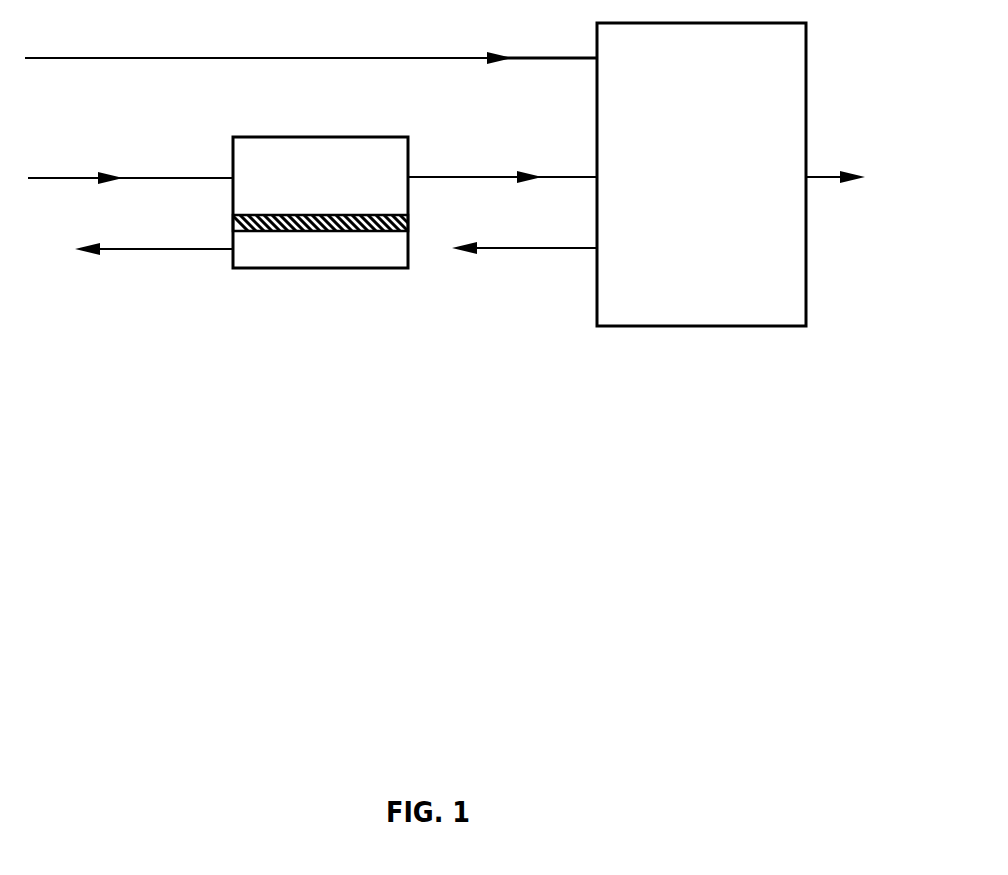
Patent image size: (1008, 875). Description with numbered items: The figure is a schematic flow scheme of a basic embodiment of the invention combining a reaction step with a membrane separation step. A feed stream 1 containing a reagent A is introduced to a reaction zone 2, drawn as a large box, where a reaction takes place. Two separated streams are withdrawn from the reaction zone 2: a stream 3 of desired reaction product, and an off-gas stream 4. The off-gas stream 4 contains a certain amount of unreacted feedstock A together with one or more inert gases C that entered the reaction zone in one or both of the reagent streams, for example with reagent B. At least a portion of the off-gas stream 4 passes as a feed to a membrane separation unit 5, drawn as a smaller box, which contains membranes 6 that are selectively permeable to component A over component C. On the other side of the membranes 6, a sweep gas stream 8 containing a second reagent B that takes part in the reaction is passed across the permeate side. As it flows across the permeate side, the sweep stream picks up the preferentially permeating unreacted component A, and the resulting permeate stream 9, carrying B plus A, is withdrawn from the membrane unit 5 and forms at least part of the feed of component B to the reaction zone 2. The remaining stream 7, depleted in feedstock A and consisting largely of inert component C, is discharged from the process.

The feed stream 1 is at (311, 45).
The reaction zone 2 is at (806, 90).
The desired reaction product stream 3 is at (848, 181).
The off-gas stream 4 is at (524, 257).
The membrane separation unit 5 is at (340, 268).
The membranes 6 is at (325, 214).
The depleted stream 7 is at (143, 266).
The sweep gas stream 8 is at (130, 165).
The permeate stream 9 is at (502, 158).